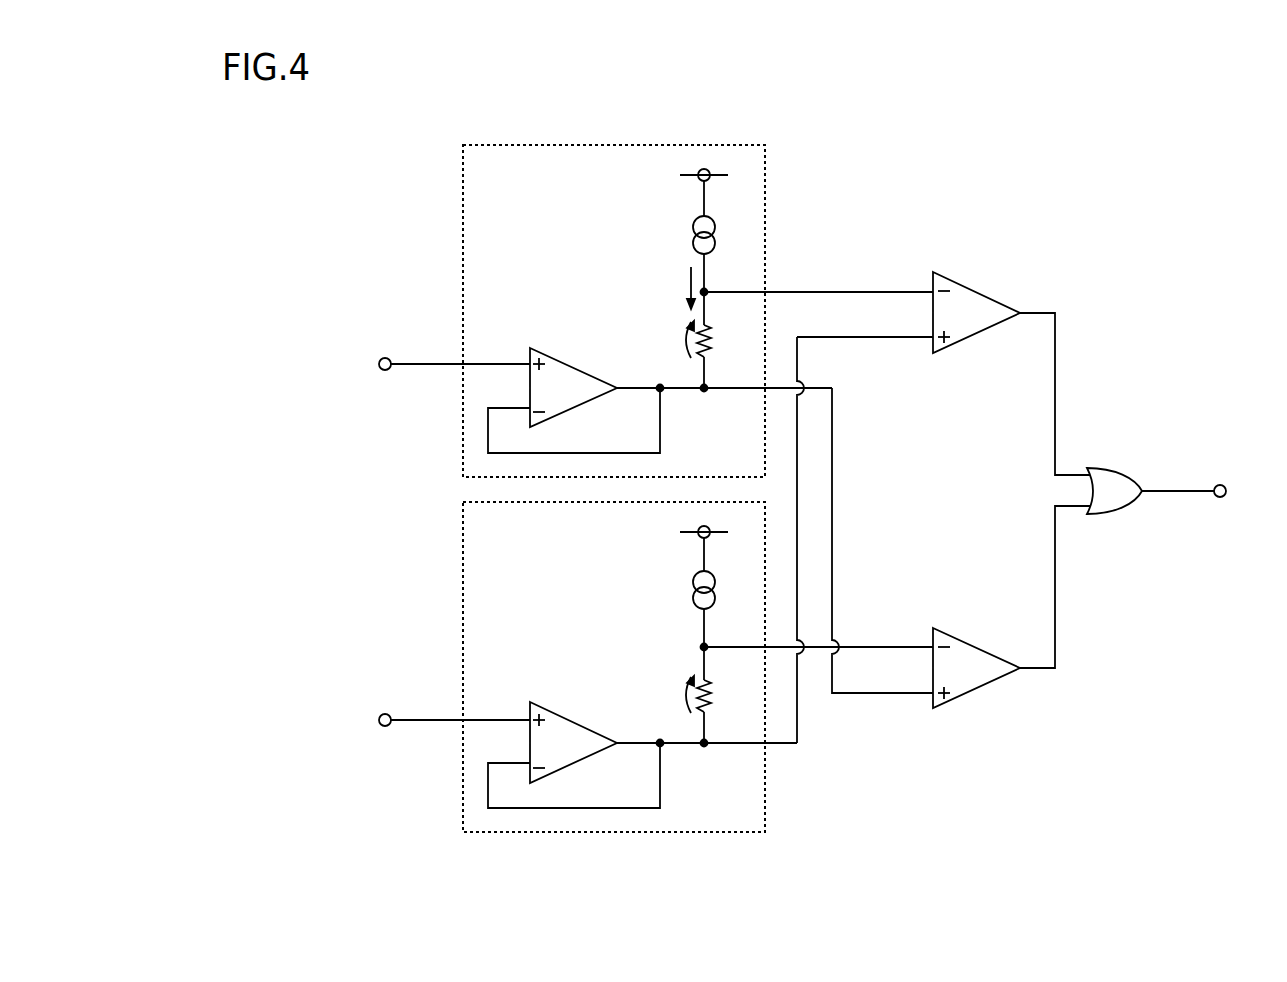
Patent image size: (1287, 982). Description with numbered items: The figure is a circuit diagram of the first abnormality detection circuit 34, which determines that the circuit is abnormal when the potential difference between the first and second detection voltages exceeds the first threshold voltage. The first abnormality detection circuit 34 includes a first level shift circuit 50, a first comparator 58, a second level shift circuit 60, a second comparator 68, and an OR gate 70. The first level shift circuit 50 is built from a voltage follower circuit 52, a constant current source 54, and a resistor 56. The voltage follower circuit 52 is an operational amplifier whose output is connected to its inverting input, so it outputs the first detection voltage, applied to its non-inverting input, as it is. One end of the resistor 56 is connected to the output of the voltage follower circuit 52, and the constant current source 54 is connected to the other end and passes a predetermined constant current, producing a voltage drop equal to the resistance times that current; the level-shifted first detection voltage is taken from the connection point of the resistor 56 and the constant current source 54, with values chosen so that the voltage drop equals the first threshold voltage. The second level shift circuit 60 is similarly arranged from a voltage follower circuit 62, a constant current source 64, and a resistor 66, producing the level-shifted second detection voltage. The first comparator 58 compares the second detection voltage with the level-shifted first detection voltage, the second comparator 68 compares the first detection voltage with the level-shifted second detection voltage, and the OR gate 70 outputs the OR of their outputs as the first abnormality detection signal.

The first abnormality detection circuit 34 is at (808, 907).
The first level shift circuit 50 is at (765, 165).
The voltage follower circuit 52 is at (577, 367).
The constant current source 54 is at (693, 237).
The resistor 56 is at (723, 341).
The first comparator 58 is at (978, 291).
The second level shift circuit 60 is at (765, 812).
The voltage follower circuit 62 is at (577, 722).
The constant current source 64 is at (693, 593).
The resistor 66 is at (723, 697).
The second comparator 68 is at (978, 647).
The OR gate 70 is at (1118, 468).